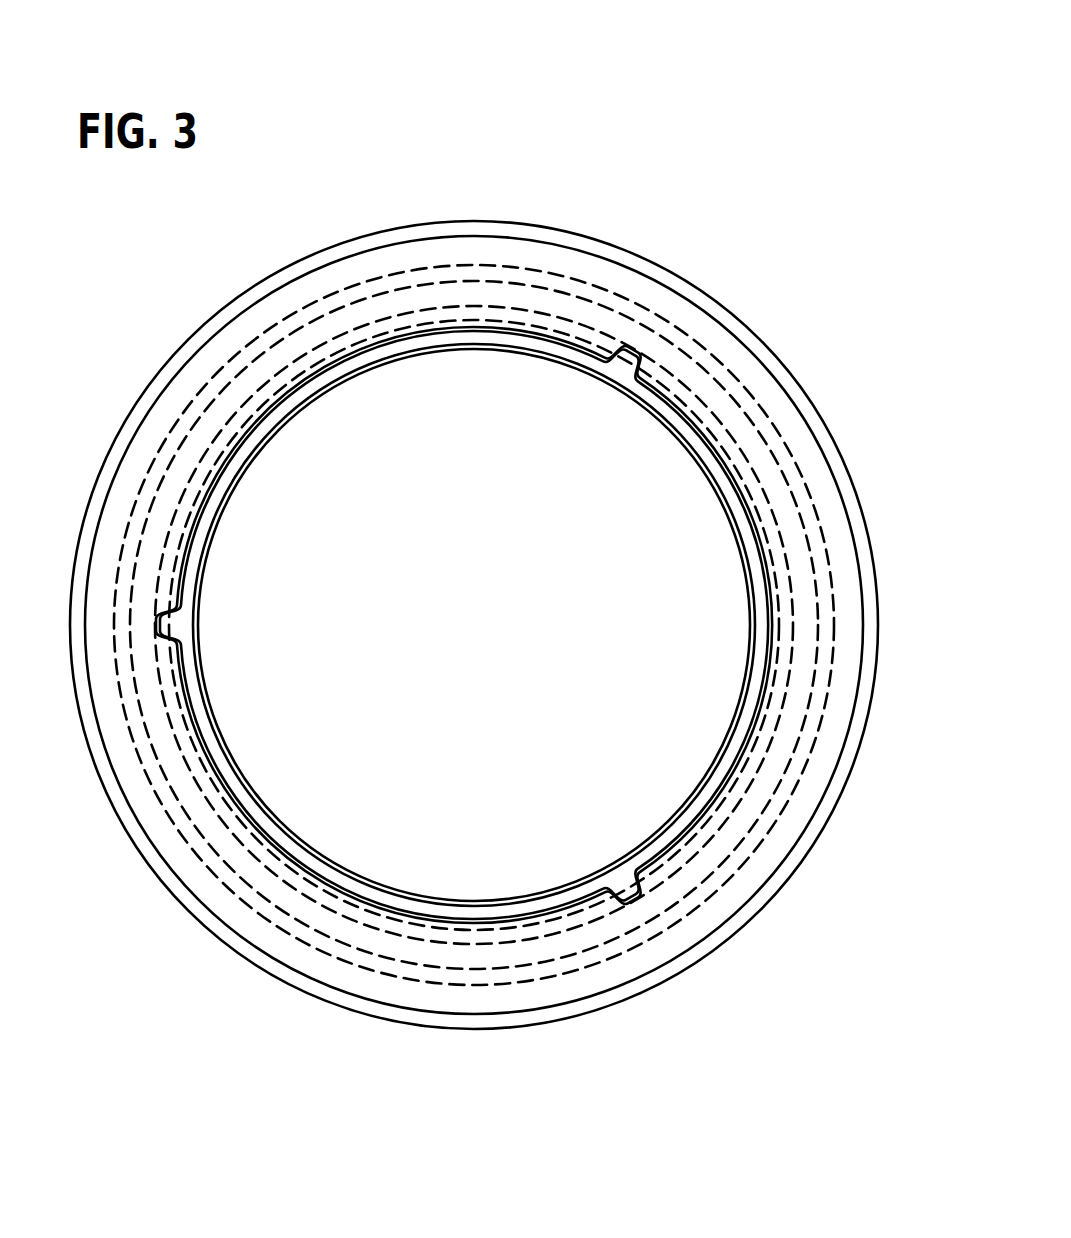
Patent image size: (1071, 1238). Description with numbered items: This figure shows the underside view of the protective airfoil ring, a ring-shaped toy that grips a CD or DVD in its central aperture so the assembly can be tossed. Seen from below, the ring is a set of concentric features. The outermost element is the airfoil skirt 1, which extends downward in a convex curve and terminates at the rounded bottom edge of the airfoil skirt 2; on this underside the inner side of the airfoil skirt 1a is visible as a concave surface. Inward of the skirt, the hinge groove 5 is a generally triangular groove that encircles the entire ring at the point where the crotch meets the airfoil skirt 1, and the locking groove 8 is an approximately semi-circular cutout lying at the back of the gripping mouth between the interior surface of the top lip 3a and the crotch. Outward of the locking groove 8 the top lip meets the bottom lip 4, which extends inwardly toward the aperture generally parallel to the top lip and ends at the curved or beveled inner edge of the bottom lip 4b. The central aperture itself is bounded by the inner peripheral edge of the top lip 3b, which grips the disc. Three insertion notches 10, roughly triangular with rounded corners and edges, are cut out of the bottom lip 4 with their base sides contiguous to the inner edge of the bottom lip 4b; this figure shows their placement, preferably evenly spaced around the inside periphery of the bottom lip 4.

The airfoil skirt 1 is at (430, 224).
The inner side of the airfoil skirt 1a is at (505, 262).
The bottom edge of the airfoil skirt 2 is at (862, 689).
The interior surface of the top lip 3a is at (722, 768).
The inner peripheral edge of the top lip 3b is at (732, 740).
The bottom lip 4 is at (752, 465).
The inner edge of the bottom lip 4b is at (745, 487).
The hinge groove 5 is at (177, 823).
The locking groove 8 is at (692, 393).
The insertion notches 10 is at (628, 350).